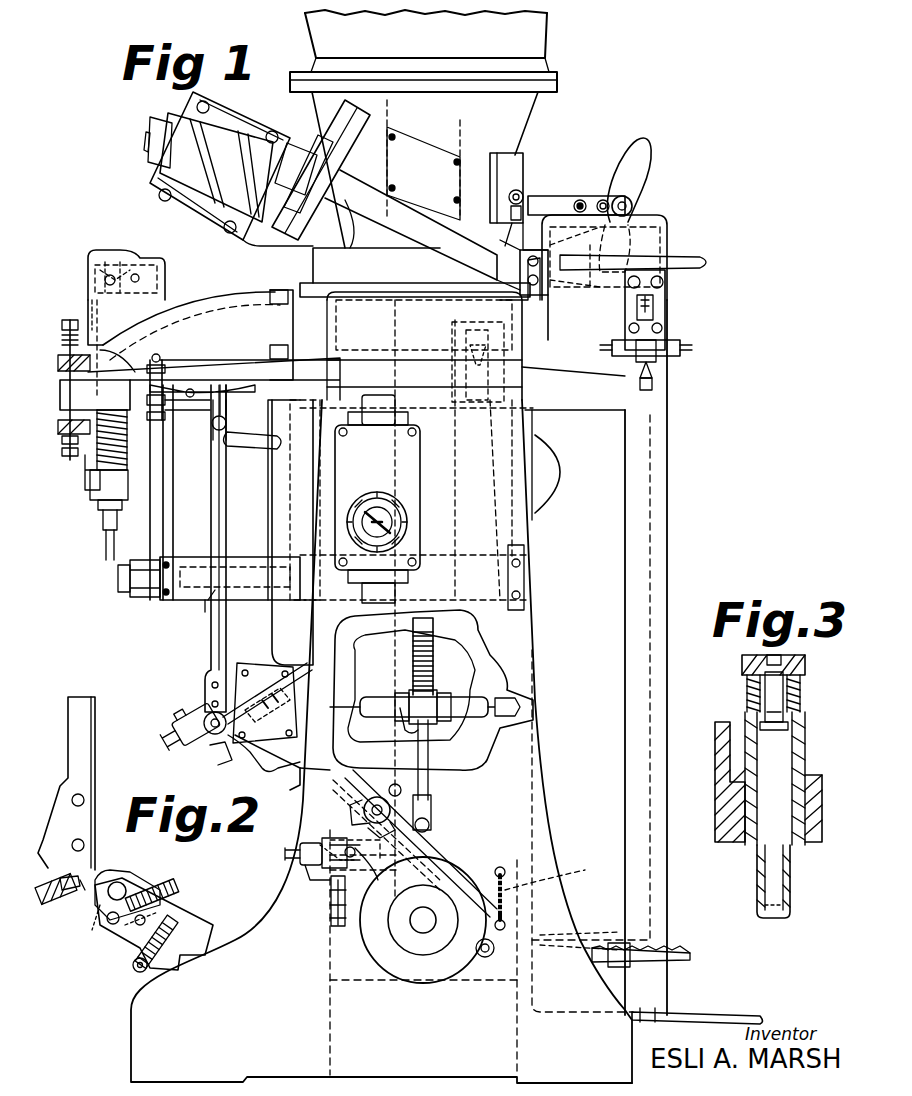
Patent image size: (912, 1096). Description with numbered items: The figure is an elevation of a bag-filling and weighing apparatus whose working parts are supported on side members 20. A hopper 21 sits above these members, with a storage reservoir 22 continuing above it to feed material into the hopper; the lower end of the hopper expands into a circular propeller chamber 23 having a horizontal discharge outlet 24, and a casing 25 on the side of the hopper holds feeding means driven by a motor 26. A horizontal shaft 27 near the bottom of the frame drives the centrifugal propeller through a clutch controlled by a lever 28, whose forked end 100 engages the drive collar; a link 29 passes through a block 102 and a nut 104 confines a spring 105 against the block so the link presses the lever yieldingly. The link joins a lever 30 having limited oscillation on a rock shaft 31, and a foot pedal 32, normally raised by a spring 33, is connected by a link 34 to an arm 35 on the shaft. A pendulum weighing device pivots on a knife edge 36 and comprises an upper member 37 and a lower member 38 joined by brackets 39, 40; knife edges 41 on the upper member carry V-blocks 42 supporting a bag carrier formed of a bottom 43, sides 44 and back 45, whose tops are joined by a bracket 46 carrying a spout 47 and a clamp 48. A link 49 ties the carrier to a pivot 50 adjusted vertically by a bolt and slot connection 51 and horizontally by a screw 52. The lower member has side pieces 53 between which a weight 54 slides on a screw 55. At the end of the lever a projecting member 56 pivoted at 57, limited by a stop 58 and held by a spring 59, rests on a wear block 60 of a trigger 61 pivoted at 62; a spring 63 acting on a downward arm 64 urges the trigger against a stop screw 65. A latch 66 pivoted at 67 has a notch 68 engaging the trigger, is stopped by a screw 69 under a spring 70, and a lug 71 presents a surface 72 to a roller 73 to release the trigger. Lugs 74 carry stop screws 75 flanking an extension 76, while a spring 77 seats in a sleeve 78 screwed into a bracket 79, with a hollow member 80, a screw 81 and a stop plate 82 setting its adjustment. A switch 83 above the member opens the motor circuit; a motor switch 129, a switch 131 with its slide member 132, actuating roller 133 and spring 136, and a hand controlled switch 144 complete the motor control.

In FIG. 1, the side members 20 is at (538, 752).
In FIG. 1, the hopper 21 is at (520, 125).
In FIG. 1, the storage reservoir 22 is at (540, 40).
In FIG. 1, the propeller chamber 23 is at (365, 255).
In FIG. 1, the discharge outlet 24 is at (528, 300).
In FIG. 1, the casing 25 is at (407, 140).
In FIG. 1, the motor 26 is at (233, 122).
In FIG. 1, the horizontal shaft 27 is at (423, 925).
In FIG. 1, the lever 28 is at (460, 718).
In FIG. 1, the link 29 is at (430, 760).
In FIG. 1, the lever 30 is at (285, 790).
In FIG. 2, the lever 30 is at (190, 920).
In FIG. 1, the rock shaft 31 is at (378, 796).
In FIG. 1, the foot pedal 32 is at (690, 956).
In FIG. 1, the spring 33 is at (572, 886).
In FIG. 1, the link 34 is at (440, 825).
In FIG. 1, the arm 35 is at (395, 784).
In FIG. 1, the knife edge 36 is at (478, 365).
In FIG. 1, the upper member 37 is at (601, 405).
In FIG. 1, the lower member 38 is at (248, 553).
In FIG. 1, the bracket 39 is at (518, 535).
In FIG. 1, the bracket 40 is at (173, 497).
In FIG. 1, the knife edges 41 is at (652, 372).
In FIG. 1, the V-blocks 42 is at (660, 337).
In FIG. 1, the bottom 43 is at (680, 1010).
In FIG. 1, the sides 44 is at (667, 520).
In FIG. 1, the back 45 is at (600, 960).
In FIG. 1, the bracket 46 is at (520, 236).
In FIG. 1, the spout 47 is at (688, 258).
In FIG. 1, the clamp 48 is at (640, 182).
In FIG. 1, the link 49 is at (378, 880).
In FIG. 1, the pivot 50 is at (330, 838).
In FIG. 1, the bolt and slot connection 51 is at (330, 910).
In FIG. 1, the screw 52 is at (285, 856).
In FIG. 1, the side pieces 53 is at (195, 550).
In FIG. 1, the weight 54 is at (268, 467).
In FIG. 1, the screw 55 is at (200, 604).
In FIG. 2, the projecting member 56 is at (115, 882).
In FIG. 2, the pivot 57 is at (106, 920).
In FIG. 2, the stop 58 is at (133, 925).
In FIG. 2, the spring 59 is at (132, 968).
In FIG. 2, the wear block 60 is at (60, 905).
In FIG. 1, the trigger 61 is at (240, 625).
In FIG. 2, the trigger 61 is at (95, 760).
In FIG. 1, the pivot 62 is at (212, 735).
In FIG. 2, the pivot 62 is at (88, 882).
In FIG. 1, the spring 63 is at (258, 690).
In FIG. 2, the spring 63 is at (165, 880).
In FIG. 2, the arm 64 is at (92, 935).
In FIG. 1, the stop screw 65 is at (185, 712).
In FIG. 1, the latch 66 is at (250, 380).
In FIG. 1, the pivot 67 is at (192, 388).
In FIG. 1, the notch 68 is at (222, 385).
In FIG. 1, the screw 69 is at (156, 360).
In FIG. 1, the spring 70 is at (147, 400).
In FIG. 1, the lug 71 is at (278, 442).
In FIG. 1, the surface 72 is at (226, 423).
In FIG. 1, the roller 73 is at (205, 418).
In FIG. 1, the lugs 74 is at (55, 365).
In FIG. 1, the stop screws 75 is at (70, 320).
In FIG. 1, the extension 76 is at (60, 395).
In FIG. 1, the spring 77 is at (127, 440).
In FIG. 3, the spring 77 is at (747, 690).
In FIG. 3, the sleeve 78 is at (745, 838).
In FIG. 1, the bracket 79 is at (88, 470).
In FIG. 3, the bracket 79 is at (730, 772).
In FIG. 1, the hollow member 80 is at (103, 532).
In FIG. 3, the hollow member 80 is at (790, 880).
In FIG. 1, the screw 81 is at (100, 372).
In FIG. 3, the screw 81 is at (775, 730).
In FIG. 3, the stop plate 82 is at (745, 657).
In FIG. 1, the switch 83 is at (140, 262).
In FIG. 1, the forked end 100 is at (470, 690).
In FIG. 1, the block 102 is at (405, 725).
In FIG. 1, the nut 104 is at (433, 624).
In FIG. 1, the spring 105 is at (433, 650).
In FIG. 1, the motor switch 129 is at (420, 462).
In FIG. 1, the switch 131 is at (518, 172).
In FIG. 1, the member 132 is at (615, 196).
In FIG. 1, the actuating roller 133 is at (525, 195).
In FIG. 1, the spring 136 is at (590, 188).
In FIG. 1, the hand controlled switch 144 is at (375, 508).